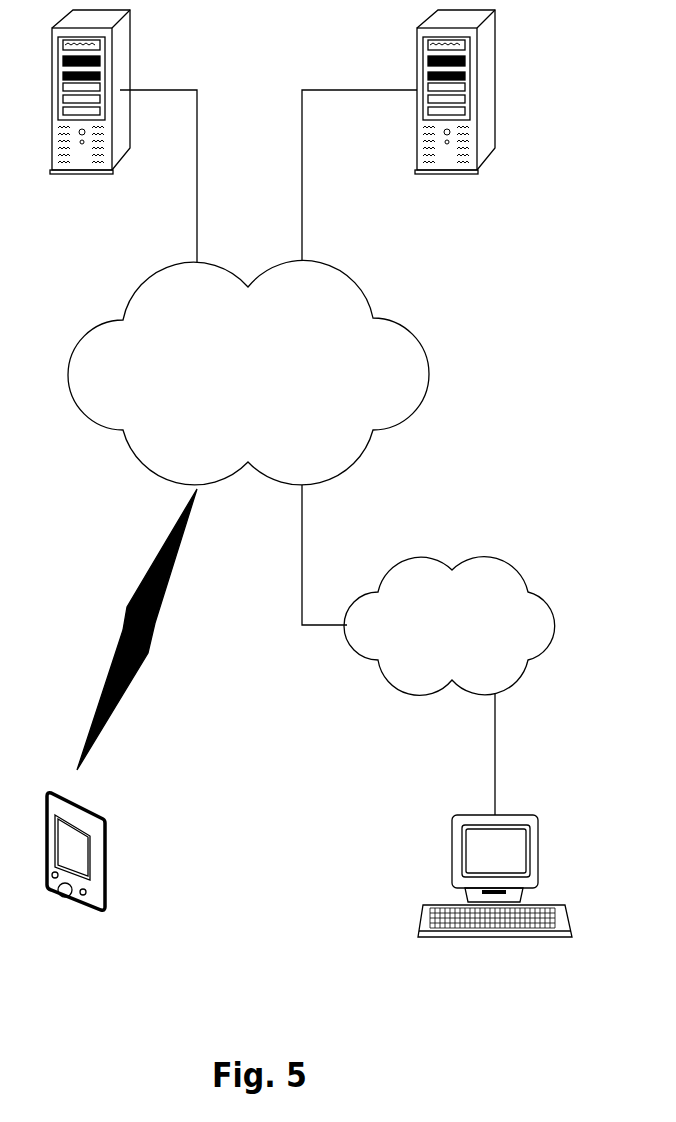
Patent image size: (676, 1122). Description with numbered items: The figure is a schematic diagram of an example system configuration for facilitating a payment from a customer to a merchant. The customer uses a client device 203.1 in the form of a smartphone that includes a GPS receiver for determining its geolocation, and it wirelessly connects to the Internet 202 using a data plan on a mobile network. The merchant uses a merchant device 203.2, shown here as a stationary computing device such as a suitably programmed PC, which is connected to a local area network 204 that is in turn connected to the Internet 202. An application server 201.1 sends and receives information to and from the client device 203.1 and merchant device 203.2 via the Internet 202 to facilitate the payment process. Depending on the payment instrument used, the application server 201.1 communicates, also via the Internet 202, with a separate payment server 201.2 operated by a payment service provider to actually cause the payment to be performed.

The application server 201.1 is at (90, 122).
The payment server 201.2 is at (455, 122).
The Internet 202 is at (248, 373).
The client device 203.1 is at (83, 883).
The merchant device 203.2 is at (495, 901).
The local area network 204 is at (449, 626).